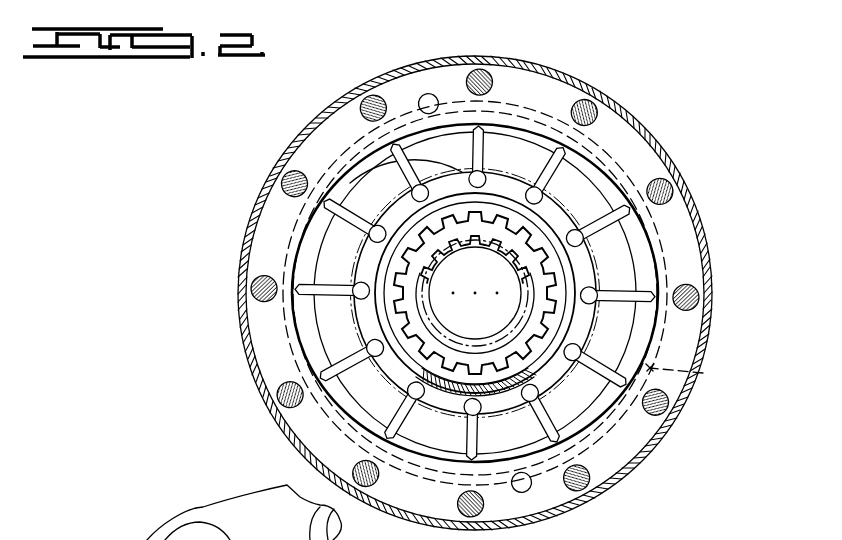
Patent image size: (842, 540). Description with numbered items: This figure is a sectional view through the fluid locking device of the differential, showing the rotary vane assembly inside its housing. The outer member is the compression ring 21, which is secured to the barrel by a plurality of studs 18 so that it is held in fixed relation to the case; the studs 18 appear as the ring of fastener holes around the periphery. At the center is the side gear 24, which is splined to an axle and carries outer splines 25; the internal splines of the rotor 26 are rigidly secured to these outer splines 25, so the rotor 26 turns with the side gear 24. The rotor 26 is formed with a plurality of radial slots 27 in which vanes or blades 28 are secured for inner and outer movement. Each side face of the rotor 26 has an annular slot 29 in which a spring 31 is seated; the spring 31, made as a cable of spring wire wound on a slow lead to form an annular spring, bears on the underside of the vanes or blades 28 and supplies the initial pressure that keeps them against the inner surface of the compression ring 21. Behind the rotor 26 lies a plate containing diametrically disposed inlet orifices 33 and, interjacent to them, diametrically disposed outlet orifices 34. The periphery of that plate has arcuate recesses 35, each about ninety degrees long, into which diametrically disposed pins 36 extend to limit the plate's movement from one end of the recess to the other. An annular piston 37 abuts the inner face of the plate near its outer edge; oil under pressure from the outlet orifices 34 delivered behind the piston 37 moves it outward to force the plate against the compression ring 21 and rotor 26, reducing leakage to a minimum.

The studs 18 is at (377, 85).
The compression ring 21 is at (343, 162).
The side gear 24 is at (420, 297).
The outer splines 25 is at (553, 268).
The rotor 26 is at (518, 148).
The slots 27 is at (543, 192).
The vanes or blades 28 is at (481, 152).
The annular slot 29 is at (458, 160).
The spring 31 is at (446, 400).
The inlet orifices 33 is at (320, 92).
The outlet orifices 34 is at (278, 394).
The arcuate recesses 35 is at (447, 100).
The pins 36 is at (429, 91).
The annular piston 37 is at (668, 214).